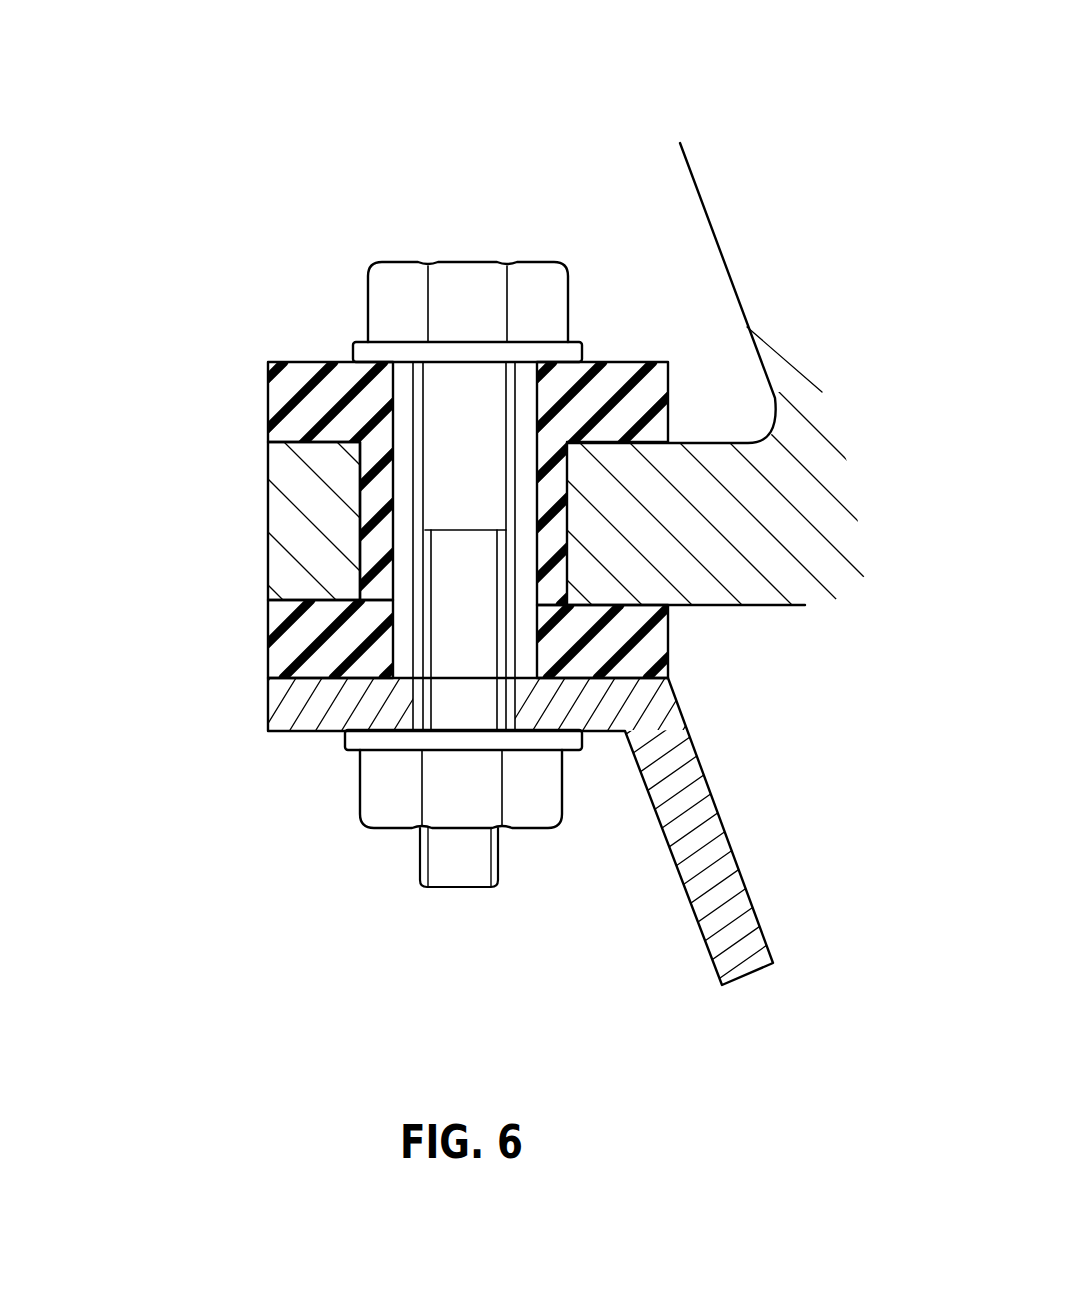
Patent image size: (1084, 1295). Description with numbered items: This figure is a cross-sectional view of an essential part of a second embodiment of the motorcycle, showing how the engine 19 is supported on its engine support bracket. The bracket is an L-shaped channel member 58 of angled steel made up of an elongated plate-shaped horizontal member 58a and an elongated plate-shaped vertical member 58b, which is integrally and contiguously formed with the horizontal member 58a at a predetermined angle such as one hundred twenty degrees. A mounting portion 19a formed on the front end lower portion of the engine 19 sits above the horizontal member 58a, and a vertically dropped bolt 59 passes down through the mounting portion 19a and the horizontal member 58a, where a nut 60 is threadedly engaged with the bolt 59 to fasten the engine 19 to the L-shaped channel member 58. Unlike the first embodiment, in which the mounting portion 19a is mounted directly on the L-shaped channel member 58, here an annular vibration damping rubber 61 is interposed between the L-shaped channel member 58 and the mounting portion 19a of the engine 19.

The engine 19 is at (658, 217).
The mounting portion 19a is at (303, 477).
The L-shaped channel member 58 is at (748, 805).
The horizontal member 58a is at (298, 705).
The vertical member 58b is at (738, 908).
The bolt 59 is at (398, 290).
The nut 60 is at (383, 785).
The vibration damping rubber 61 is at (303, 635).